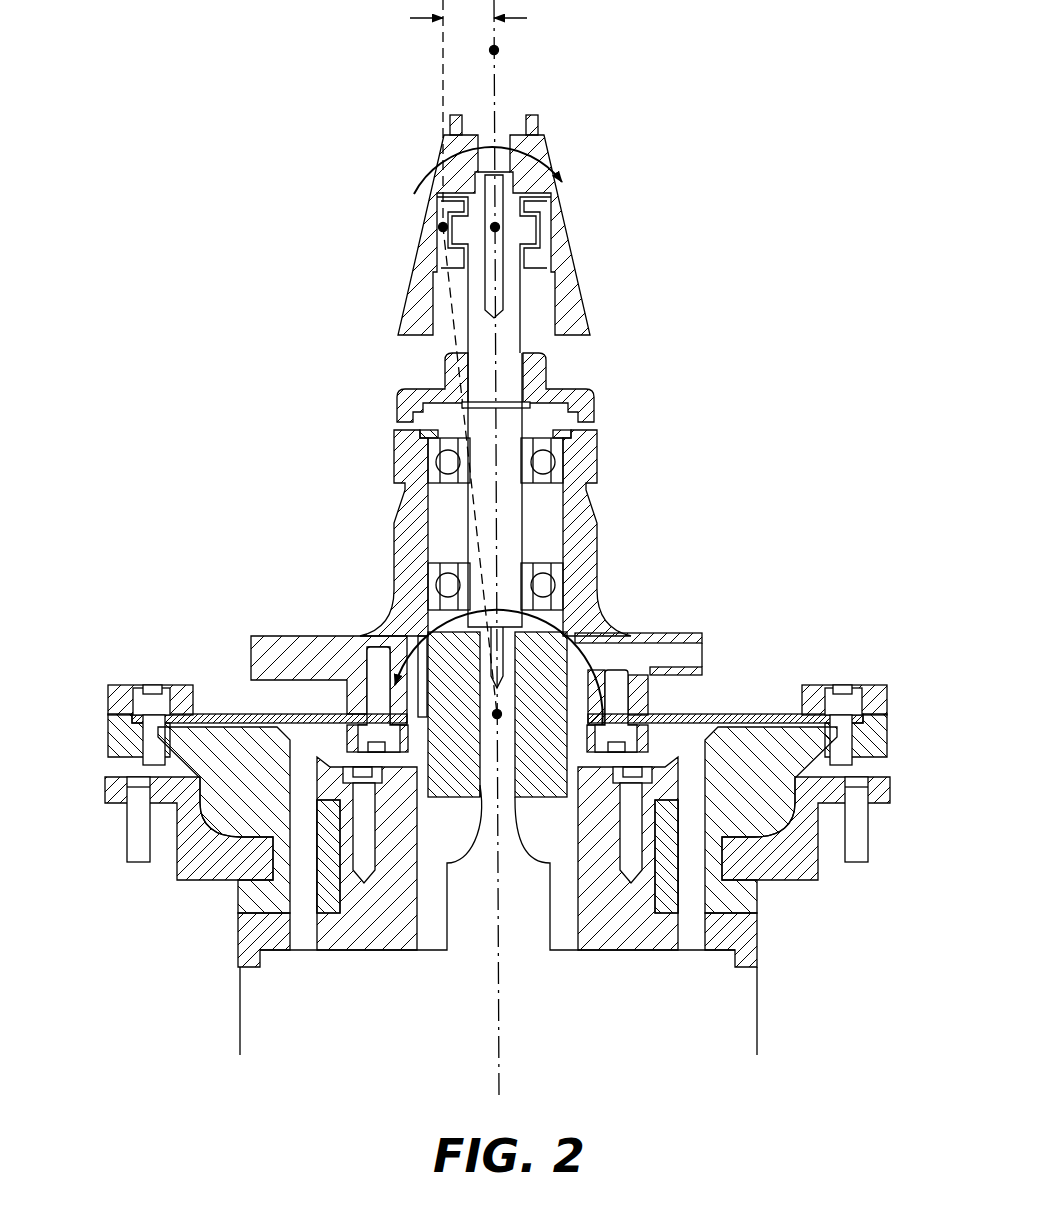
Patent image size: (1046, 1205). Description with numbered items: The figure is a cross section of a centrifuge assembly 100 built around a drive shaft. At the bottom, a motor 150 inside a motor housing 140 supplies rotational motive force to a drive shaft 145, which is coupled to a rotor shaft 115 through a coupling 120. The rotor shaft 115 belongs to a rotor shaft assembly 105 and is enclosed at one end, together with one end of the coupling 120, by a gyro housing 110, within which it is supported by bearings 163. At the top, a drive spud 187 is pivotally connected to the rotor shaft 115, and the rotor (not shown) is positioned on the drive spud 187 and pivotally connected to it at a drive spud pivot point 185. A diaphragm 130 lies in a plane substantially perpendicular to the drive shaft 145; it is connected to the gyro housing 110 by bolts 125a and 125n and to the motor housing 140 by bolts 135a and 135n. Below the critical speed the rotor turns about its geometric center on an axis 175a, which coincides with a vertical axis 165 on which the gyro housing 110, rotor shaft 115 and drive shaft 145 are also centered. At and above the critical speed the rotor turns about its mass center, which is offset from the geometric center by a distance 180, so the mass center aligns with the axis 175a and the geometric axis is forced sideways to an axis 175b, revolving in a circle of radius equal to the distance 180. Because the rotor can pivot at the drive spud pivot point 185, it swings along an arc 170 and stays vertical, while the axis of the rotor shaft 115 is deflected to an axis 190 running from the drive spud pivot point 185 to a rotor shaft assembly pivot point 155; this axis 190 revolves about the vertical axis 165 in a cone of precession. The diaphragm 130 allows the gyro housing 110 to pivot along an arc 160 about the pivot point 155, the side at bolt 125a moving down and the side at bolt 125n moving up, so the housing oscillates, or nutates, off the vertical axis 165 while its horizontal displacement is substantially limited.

The centrifuge assembly 100 is at (415, 460).
The rotor shaft assembly 105 is at (393, 505).
The gyro housing 110 is at (396, 534).
The rotor shaft 115 is at (508, 545).
The coupling 120 is at (440, 662).
The bolt 125a is at (378, 688).
The bolt 125n is at (640, 686).
The diaphragm 130 is at (244, 714).
The bolt 135a is at (153, 700).
The bolt 135n is at (838, 700).
The motor housing 140 is at (125, 733).
The drive shaft 145 is at (489, 787).
The motor 150 is at (265, 1016).
The rotor shaft assembly pivot point 155 is at (568, 640).
The arc 160 is at (432, 612).
The bearings 163 is at (546, 462).
The vertical axis 165 is at (505, 333).
The arc 170 is at (565, 180).
The axis 175a is at (496, 78).
The axis 175b is at (443, 76).
The distance 180 is at (468, 20).
The drive spud pivot point 185 is at (494, 232).
The drive spud 187 is at (420, 300).
The axis 190 is at (455, 340).